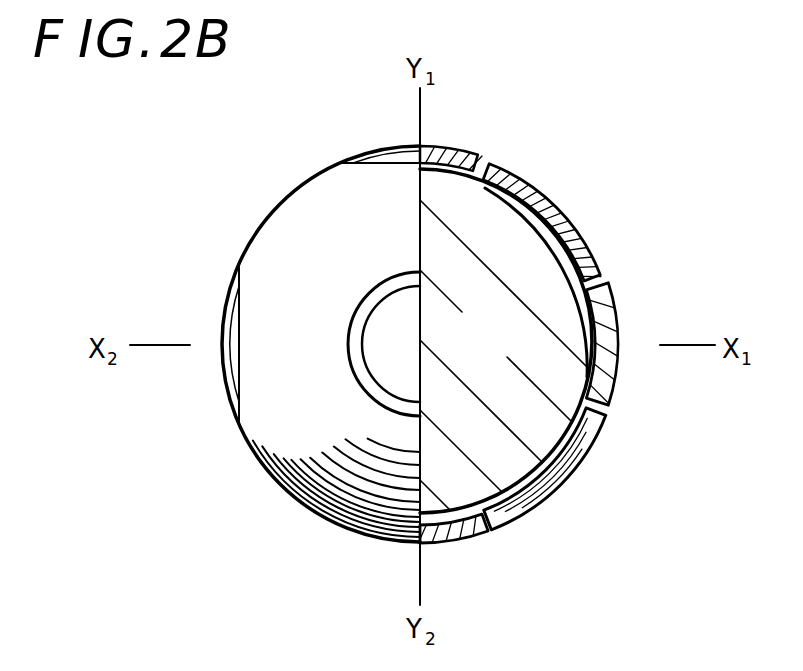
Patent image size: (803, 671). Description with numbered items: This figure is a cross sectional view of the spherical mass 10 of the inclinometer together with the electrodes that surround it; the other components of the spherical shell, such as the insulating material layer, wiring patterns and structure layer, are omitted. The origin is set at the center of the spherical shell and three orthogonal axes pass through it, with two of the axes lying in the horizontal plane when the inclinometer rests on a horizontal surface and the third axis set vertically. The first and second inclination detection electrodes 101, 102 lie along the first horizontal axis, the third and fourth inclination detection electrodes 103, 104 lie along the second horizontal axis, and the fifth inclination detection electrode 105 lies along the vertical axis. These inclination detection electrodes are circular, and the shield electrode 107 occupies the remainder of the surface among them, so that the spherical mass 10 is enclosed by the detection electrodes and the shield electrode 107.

The spherical mass 10 is at (500, 350).
The first inclination detection electrode 101 is at (622, 328).
The second inclination detection electrode 102 is at (224, 360).
The third inclination detection electrode 103 is at (453, 147).
The fourth inclination detection electrode 104 is at (455, 541).
The fifth inclination detection electrode 105 is at (393, 310).
The shield electrode 107 is at (563, 210).